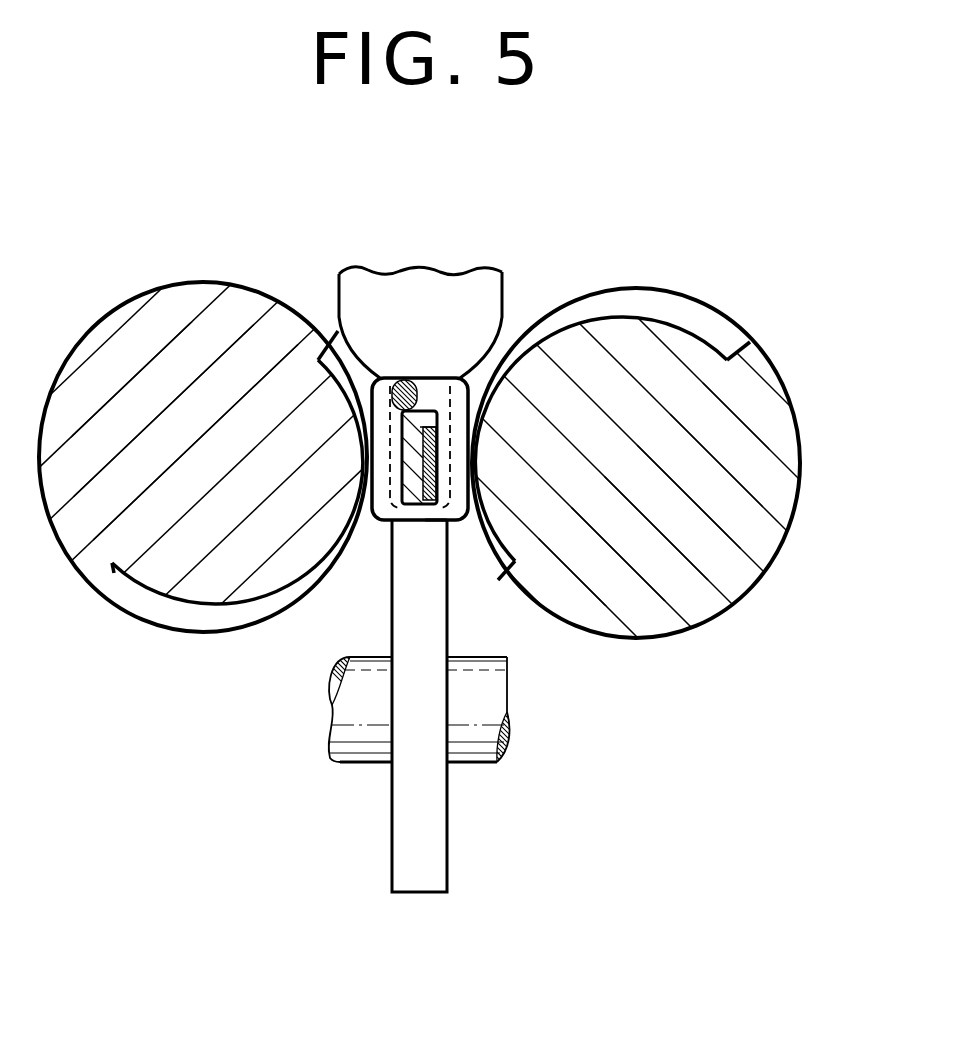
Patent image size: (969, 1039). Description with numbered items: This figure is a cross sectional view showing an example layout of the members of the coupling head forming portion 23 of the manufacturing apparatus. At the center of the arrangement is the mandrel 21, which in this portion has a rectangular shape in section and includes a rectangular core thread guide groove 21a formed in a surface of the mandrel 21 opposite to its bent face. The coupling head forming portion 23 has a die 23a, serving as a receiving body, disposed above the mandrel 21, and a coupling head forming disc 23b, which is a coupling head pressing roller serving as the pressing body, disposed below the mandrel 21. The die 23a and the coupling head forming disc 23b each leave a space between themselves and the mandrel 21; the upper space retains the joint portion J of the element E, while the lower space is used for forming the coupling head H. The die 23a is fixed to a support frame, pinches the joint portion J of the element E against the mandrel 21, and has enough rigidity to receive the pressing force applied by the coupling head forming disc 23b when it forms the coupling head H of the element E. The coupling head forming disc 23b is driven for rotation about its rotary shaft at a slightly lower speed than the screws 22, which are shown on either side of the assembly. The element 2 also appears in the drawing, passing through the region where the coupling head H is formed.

The screws 22 is at (175, 303).
The coupling head forming portion 23 is at (463, 496).
The die 23a is at (468, 302).
The coupling head forming disc 23b is at (447, 812).
The mandrel 21 is at (402, 432).
The core thread guide groove 21a is at (373, 498).
The filament 2 is at (440, 447).
The joint portion J is at (425, 412).
The coupling head H is at (418, 525).
The element E is at (435, 535).